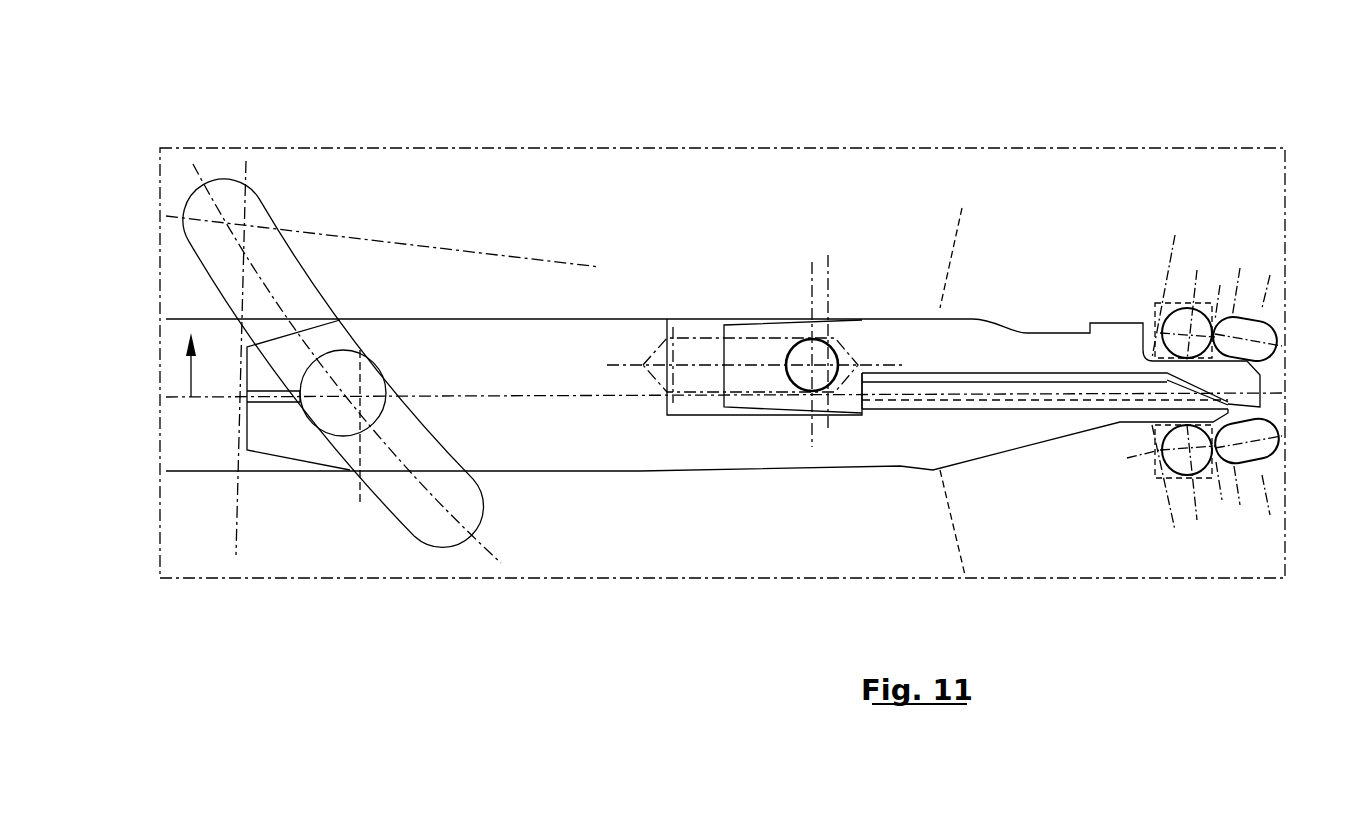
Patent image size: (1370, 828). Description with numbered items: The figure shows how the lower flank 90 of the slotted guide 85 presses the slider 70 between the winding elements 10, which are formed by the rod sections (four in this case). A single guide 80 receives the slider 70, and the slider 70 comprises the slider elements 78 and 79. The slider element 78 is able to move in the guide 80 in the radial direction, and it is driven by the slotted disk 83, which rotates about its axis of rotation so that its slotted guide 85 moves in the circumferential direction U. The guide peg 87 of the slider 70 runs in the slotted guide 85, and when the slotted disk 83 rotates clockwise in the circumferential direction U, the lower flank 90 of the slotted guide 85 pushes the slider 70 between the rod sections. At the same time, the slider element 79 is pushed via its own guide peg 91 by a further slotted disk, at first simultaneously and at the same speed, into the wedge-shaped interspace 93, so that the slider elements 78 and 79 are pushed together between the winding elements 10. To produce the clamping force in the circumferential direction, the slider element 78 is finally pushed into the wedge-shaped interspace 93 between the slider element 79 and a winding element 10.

The winding element 10 is at (1136, 250).
The slider 70 is at (735, 255).
The slider element 78 is at (608, 442).
The slider element 79 is at (880, 340).
The guide 80 is at (570, 294).
The slotted disk 83 is at (466, 220).
The slotted guide 85 is at (304, 236).
The guide peg 87 is at (375, 378).
The lower flank 90 is at (376, 499).
The guide peg 91 is at (345, 551).
The wedge-shaped interspace 93 is at (1305, 370).
The circumferential direction U is at (190, 370).